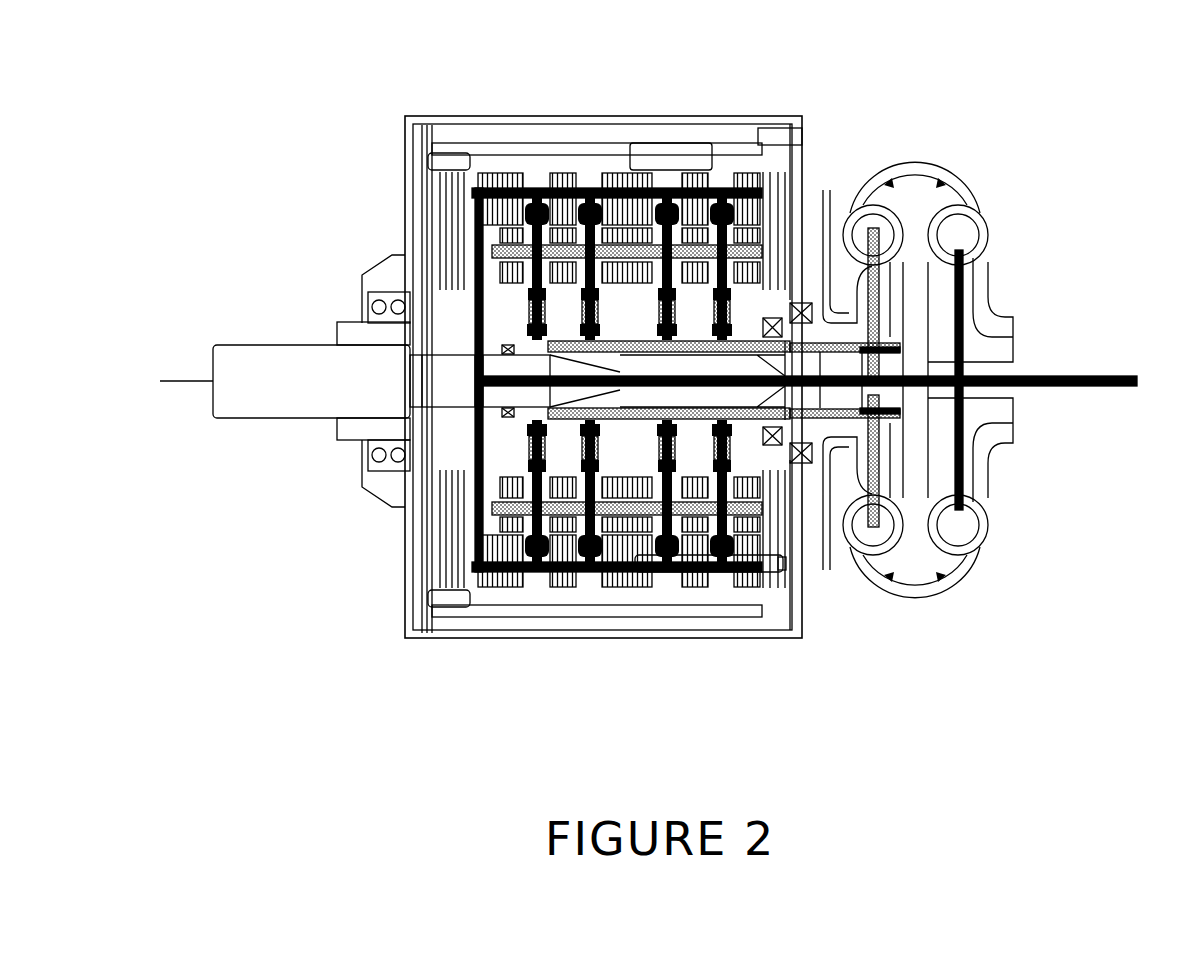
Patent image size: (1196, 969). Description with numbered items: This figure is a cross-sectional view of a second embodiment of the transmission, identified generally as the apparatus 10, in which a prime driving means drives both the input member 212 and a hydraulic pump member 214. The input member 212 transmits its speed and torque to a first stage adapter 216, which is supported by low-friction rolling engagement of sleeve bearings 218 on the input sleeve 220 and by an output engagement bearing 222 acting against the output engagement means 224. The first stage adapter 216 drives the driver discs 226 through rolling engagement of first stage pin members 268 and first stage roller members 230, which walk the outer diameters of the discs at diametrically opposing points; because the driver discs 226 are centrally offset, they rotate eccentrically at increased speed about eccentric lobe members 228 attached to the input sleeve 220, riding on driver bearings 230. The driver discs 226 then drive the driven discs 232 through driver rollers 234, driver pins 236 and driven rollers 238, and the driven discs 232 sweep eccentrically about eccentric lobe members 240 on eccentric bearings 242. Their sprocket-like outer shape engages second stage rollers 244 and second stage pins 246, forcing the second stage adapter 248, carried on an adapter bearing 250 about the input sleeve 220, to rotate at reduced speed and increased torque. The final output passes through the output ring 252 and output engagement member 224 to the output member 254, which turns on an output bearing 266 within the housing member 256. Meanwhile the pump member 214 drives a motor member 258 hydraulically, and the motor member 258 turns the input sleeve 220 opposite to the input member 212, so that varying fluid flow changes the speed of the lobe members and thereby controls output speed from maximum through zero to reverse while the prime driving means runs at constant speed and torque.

The electric drive system 10 is at (335, 75).
The input member 212 is at (1000, 376).
The hydraulic pump member 214 is at (987, 222).
The first stage adapter 216 is at (475, 517).
The sleeve bearings 218 is at (785, 352).
The input sleeve 220 is at (830, 230).
The output engagement bearing 222 is at (410, 418).
The output engagement means 224 is at (435, 505).
The driver discs 226 is at (553, 575).
The eccentric lobe members 228 is at (580, 333).
The first stage roller members 230 is at (583, 190).
The driven discs 232 is at (710, 572).
The driver rollers 234 is at (625, 187).
The driver pins 236 is at (492, 250).
The driven rollers 238 is at (723, 190).
The eccentric lobe members 240 is at (712, 333).
The eccentric bearings 242 is at (712, 462).
The second stage rollers 244 is at (718, 577).
The second stage pins 246 is at (783, 567).
The second stage adapter 248 is at (780, 180).
The adapter bearing 250 is at (772, 445).
The output ring 252 is at (557, 612).
The output member 254 is at (285, 363).
The housing member 256 is at (405, 613).
The motor member 258 is at (870, 193).
The output bearing 266 is at (370, 308).
The first stage pin members 268 is at (490, 193).